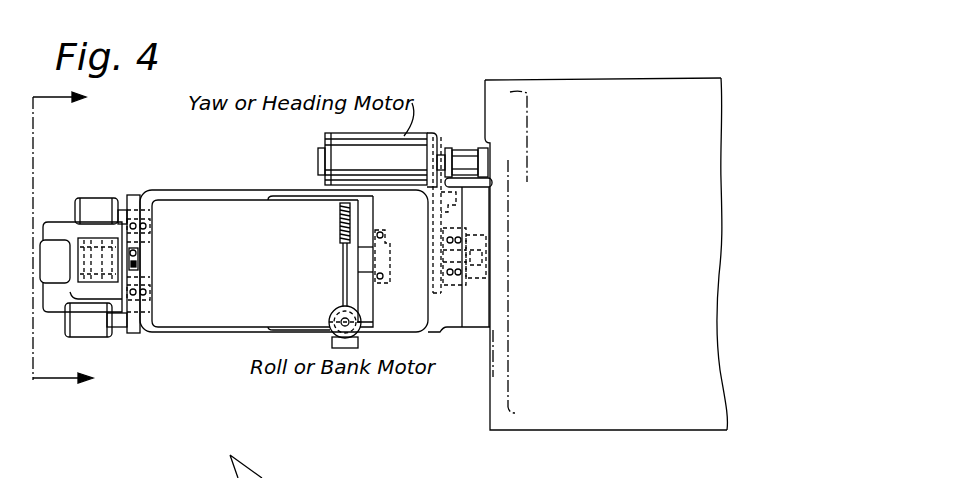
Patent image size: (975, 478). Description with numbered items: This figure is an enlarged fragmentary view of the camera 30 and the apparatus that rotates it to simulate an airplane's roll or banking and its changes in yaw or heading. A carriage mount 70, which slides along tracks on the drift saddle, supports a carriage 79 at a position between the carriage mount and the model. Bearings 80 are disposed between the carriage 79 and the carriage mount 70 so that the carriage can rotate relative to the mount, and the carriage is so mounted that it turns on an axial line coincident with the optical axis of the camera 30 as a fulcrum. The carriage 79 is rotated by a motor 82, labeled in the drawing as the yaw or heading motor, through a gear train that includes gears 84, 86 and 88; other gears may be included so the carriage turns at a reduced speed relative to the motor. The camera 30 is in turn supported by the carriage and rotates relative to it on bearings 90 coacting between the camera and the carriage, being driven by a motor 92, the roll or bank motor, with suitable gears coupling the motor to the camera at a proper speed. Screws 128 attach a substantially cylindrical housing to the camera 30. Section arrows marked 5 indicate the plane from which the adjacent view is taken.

The section line 5- 5 is at (61, 238).
The camera 30 is at (194, 302).
The carriage mount 70 is at (546, 428).
The carriage 79 is at (441, 325).
The bearings 80 is at (463, 243).
The motor 82 is at (340, 150).
The gear 84 is at (434, 284).
The gear 86 is at (441, 214).
The gear 88 is at (443, 150).
The bearings 90 is at (388, 276).
The motor 92 is at (333, 336).
The screws 128 is at (138, 256).